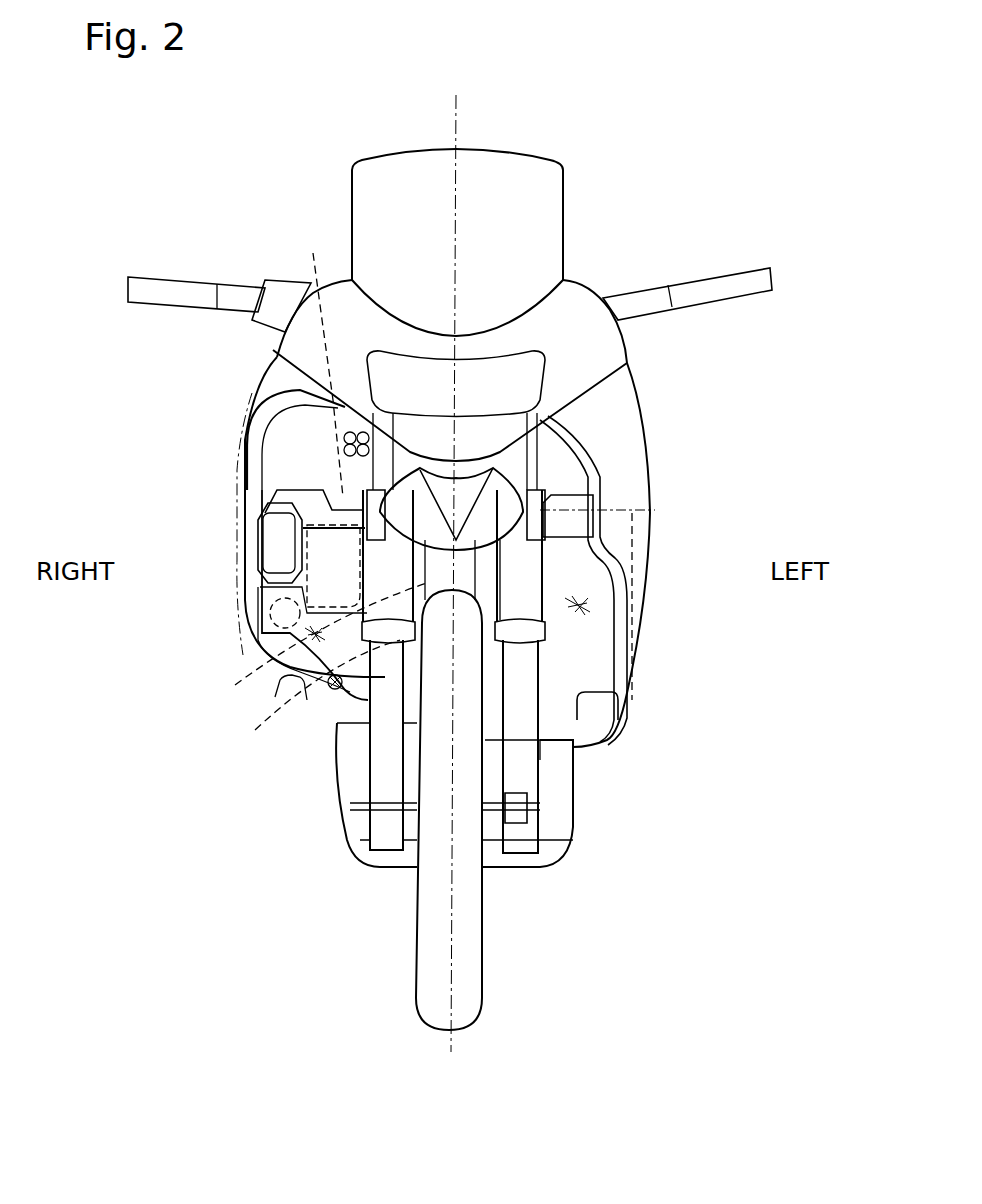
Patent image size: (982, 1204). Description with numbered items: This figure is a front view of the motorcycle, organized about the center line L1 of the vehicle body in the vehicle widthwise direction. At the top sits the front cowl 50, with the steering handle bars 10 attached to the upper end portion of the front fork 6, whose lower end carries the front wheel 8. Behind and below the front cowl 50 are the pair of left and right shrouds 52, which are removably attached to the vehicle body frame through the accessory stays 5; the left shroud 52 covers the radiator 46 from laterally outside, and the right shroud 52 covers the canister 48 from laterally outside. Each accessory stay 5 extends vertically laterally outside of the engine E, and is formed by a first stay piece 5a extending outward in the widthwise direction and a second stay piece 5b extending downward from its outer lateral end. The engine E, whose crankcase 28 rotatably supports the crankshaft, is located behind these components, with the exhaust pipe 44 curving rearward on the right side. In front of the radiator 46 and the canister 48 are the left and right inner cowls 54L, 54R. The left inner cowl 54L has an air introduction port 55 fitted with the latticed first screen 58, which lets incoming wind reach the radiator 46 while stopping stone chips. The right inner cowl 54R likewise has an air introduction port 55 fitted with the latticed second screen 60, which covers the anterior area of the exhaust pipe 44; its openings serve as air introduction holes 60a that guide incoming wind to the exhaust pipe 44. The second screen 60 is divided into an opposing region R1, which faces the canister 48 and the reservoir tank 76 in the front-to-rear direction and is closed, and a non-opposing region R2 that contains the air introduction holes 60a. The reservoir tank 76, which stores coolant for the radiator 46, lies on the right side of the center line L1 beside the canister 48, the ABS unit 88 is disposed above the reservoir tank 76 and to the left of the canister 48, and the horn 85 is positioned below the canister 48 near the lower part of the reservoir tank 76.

The center line of the vehicle body L1 is at (459, 120).
The front cowl 50 is at (613, 345).
The steering handle bars 10 is at (188, 290).
The shroud 52 is at (258, 400).
The accessory stay 5 is at (247, 425).
The first stay piece 5a is at (290, 395).
The second stay piece 5b is at (246, 491).
The reservoir tank 76 is at (193, 608).
The ABS unit 88 is at (352, 500).
The right inner cowl 54R is at (300, 497).
The left inner cowl 54L is at (578, 527).
The canister 48 is at (262, 548).
The opposing region R1 is at (323, 540).
The non-opposing region R2 is at (310, 687).
The horn 85 is at (232, 640).
The second screen 60 is at (313, 634).
The air introduction holes 60a is at (228, 735).
The air introduction port 55 is at (258, 650).
The exhaust pipe 44 is at (285, 683).
The front fork 6 is at (383, 765).
The first screen 58 is at (593, 613).
The radiator 46 is at (633, 627).
The crankcase 28 is at (563, 803).
The engine E is at (573, 847).
The front wheel 8 is at (482, 932).